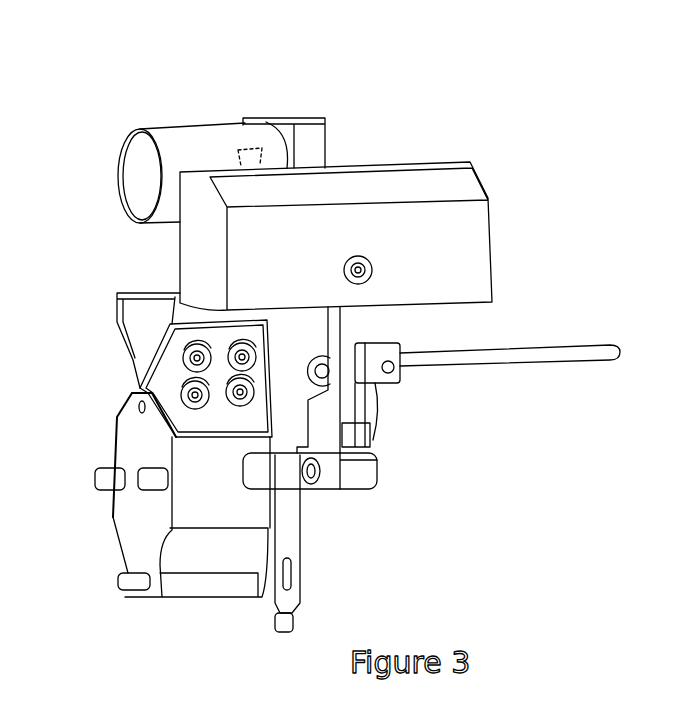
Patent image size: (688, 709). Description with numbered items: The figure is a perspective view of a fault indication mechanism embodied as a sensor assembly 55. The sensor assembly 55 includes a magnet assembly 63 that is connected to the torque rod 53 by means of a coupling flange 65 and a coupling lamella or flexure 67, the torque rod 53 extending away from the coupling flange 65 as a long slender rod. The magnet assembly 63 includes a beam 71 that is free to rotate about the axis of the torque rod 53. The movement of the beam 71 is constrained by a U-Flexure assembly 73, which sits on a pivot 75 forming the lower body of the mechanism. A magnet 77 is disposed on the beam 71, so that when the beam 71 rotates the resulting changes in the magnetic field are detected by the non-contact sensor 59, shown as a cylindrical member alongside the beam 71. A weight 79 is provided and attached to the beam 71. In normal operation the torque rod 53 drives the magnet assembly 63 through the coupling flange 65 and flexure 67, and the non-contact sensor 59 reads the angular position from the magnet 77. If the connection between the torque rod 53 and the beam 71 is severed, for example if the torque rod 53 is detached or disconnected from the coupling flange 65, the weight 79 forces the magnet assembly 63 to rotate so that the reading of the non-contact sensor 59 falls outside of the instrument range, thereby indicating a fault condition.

The sensor assembly 55 is at (139, 57).
The non-contact sensor 59 is at (118, 165).
The magnet 77 is at (247, 150).
The magnet assembly 63 is at (316, 98).
The beam 71 is at (327, 148).
The weight 79 is at (443, 183).
The torque rod 53 is at (583, 343).
The coupling flange 65 is at (387, 388).
The coupling lamella or flexure 67 is at (367, 432).
The U-Flexure assembly 73 is at (133, 357).
The pivot 75 is at (118, 527).